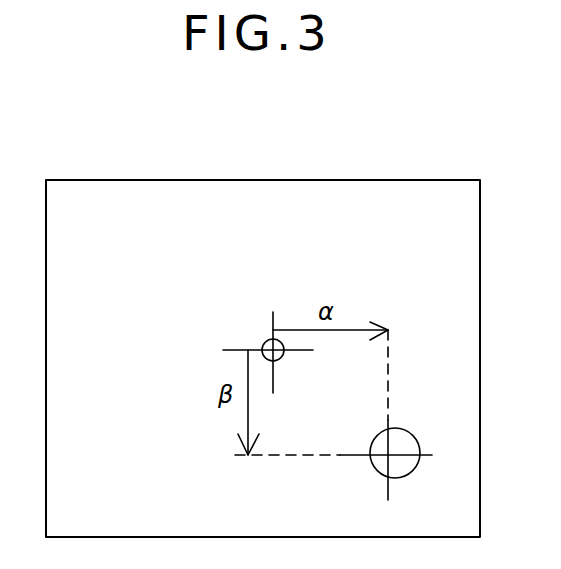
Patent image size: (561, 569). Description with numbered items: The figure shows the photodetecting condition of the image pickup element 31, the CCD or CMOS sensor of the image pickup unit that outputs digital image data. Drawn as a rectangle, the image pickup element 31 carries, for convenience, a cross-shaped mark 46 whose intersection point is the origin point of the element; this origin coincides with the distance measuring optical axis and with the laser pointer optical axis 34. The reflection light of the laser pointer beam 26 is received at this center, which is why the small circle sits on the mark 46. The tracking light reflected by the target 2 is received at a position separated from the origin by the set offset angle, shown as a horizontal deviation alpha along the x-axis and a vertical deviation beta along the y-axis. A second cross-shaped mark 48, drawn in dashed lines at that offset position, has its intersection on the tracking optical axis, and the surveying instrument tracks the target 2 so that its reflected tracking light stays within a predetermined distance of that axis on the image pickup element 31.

The image pickup element 31 is at (315, 178).
The mark 46 is at (270, 320).
The laser pointer optical axis 34 is at (262, 347).
The laser pointer beam 26 is at (283, 358).
The mark 48 is at (387, 490).
The target 2 is at (407, 428).